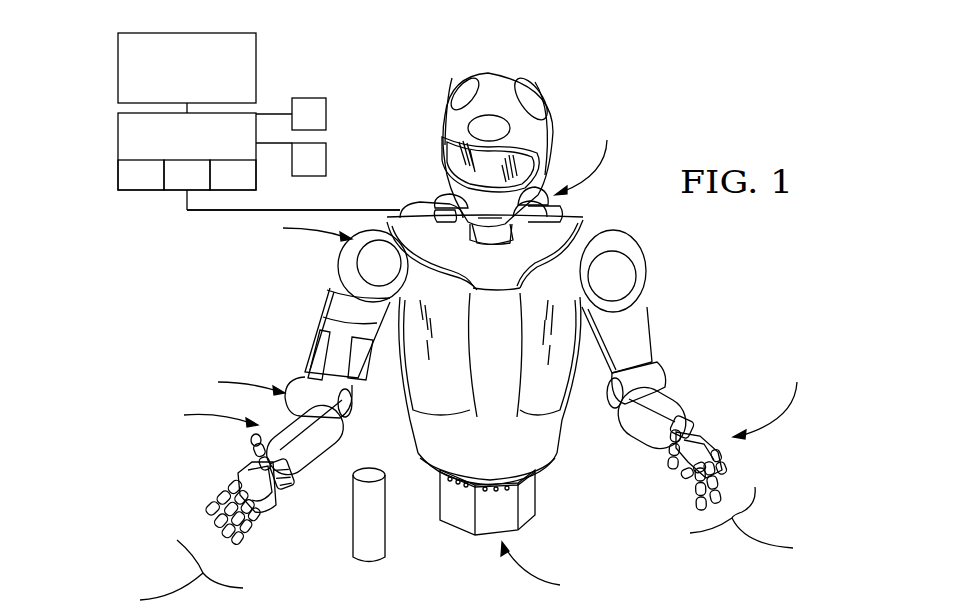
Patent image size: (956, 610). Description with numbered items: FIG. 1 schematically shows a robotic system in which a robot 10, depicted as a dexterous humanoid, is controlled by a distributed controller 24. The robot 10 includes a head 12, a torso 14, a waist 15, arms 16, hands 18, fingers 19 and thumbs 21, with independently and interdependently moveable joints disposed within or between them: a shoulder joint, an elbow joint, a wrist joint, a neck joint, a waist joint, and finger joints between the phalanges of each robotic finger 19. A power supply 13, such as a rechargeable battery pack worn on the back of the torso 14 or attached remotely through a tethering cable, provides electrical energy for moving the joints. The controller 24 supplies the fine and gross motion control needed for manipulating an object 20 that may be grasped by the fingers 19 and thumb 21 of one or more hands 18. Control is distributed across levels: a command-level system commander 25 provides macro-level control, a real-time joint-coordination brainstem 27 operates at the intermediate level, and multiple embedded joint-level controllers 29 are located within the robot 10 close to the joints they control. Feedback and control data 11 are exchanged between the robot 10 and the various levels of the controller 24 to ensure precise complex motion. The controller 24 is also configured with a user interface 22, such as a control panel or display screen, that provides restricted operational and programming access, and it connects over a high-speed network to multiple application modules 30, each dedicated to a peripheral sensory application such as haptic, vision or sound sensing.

The robot 10 is at (682, 93).
The feedback and control data 11 is at (345, 210).
The head 12 is at (505, 72).
The power supply 13 is at (430, 205).
The torso 14 is at (457, 378).
The waist 15 is at (502, 508).
The arms 16 is at (317, 327).
The hands 18 is at (270, 495).
The fingers 19 is at (469, 548).
The object 20 is at (388, 515).
The thumbs 21 is at (252, 447).
The user interface 22 is at (118, 68).
The distributed controller 24 is at (118, 137).
The system commander 25 is at (141, 175).
The brainstem 27 is at (187, 175).
The embedded joint-level controllers 29 is at (233, 175).
The application modules 30 is at (291, 137).